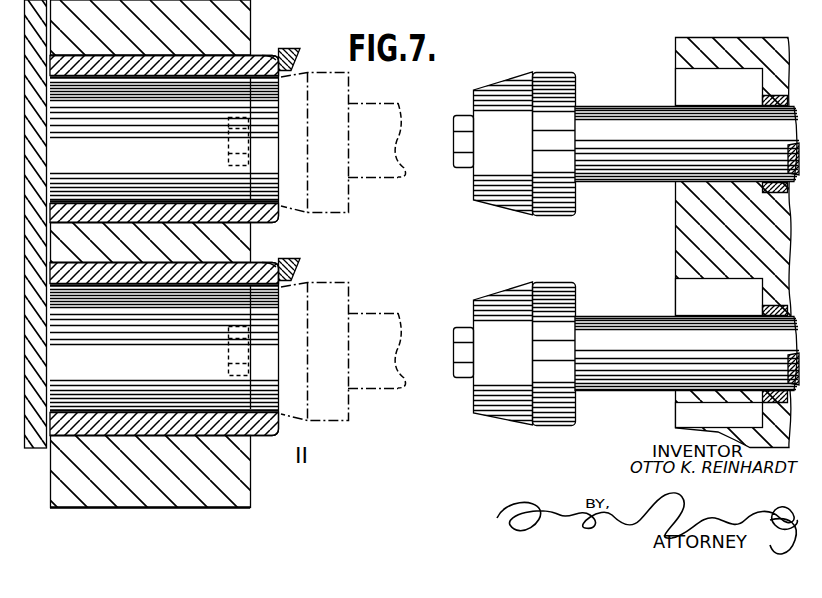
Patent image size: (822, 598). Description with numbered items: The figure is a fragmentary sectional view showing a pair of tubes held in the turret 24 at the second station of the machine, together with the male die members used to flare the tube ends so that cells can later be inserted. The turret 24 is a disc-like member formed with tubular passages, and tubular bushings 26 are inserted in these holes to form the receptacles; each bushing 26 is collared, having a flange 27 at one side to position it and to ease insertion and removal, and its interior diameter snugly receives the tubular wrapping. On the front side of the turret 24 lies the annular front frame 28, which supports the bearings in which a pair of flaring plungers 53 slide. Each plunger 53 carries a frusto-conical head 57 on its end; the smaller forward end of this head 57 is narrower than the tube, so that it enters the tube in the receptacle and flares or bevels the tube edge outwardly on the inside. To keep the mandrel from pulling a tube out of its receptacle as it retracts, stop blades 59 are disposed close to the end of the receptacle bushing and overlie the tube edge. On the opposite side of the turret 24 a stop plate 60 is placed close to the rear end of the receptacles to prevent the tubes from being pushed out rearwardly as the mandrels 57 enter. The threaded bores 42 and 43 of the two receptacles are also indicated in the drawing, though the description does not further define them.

The turret 24 is at (243, 4).
The tubular bushing 26 is at (190, 68).
The flange 27 is at (260, 56).
The front frame 28 is at (698, 231).
The upper threaded bore 42 is at (161, 201).
The lower threaded bore 43 is at (172, 410).
The flaring plunger 53 is at (404, 93).
The frusto-conical head 57 is at (348, 78).
The stop blade 59 is at (300, 55).
The stop plate 60 is at (30, 450).